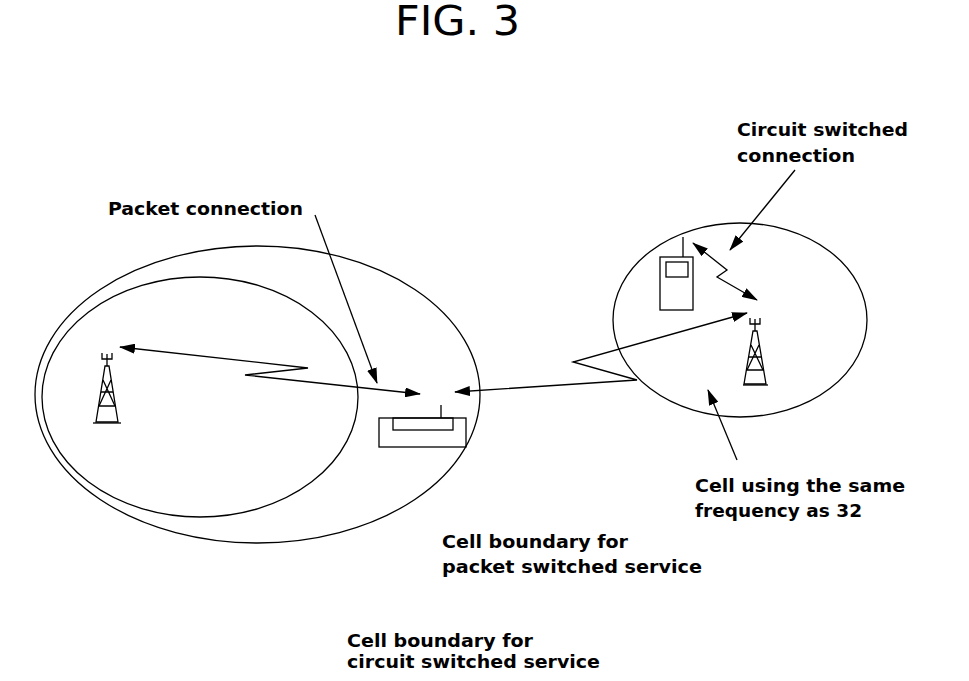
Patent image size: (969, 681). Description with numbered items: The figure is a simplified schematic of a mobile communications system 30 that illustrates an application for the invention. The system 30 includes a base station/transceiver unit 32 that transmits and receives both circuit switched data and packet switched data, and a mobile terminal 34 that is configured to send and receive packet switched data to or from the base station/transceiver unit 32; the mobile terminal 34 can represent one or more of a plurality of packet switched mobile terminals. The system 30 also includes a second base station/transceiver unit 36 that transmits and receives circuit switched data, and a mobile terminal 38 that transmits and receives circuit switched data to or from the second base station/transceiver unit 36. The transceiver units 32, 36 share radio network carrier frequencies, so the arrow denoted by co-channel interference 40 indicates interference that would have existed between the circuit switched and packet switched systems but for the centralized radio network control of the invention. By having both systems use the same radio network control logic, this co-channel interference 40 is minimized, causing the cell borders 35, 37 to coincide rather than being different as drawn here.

The mobile communications system 30 is at (678, 148).
The base station/transceiver unit 32 is at (105, 423).
The mobile terminal 34 is at (460, 462).
The cell border 35 is at (255, 512).
The second base station/transceiver unit 36 is at (768, 385).
The cell border 37 is at (386, 517).
The mobile terminal 38 is at (660, 258).
The co-channel interference 40 is at (562, 352).